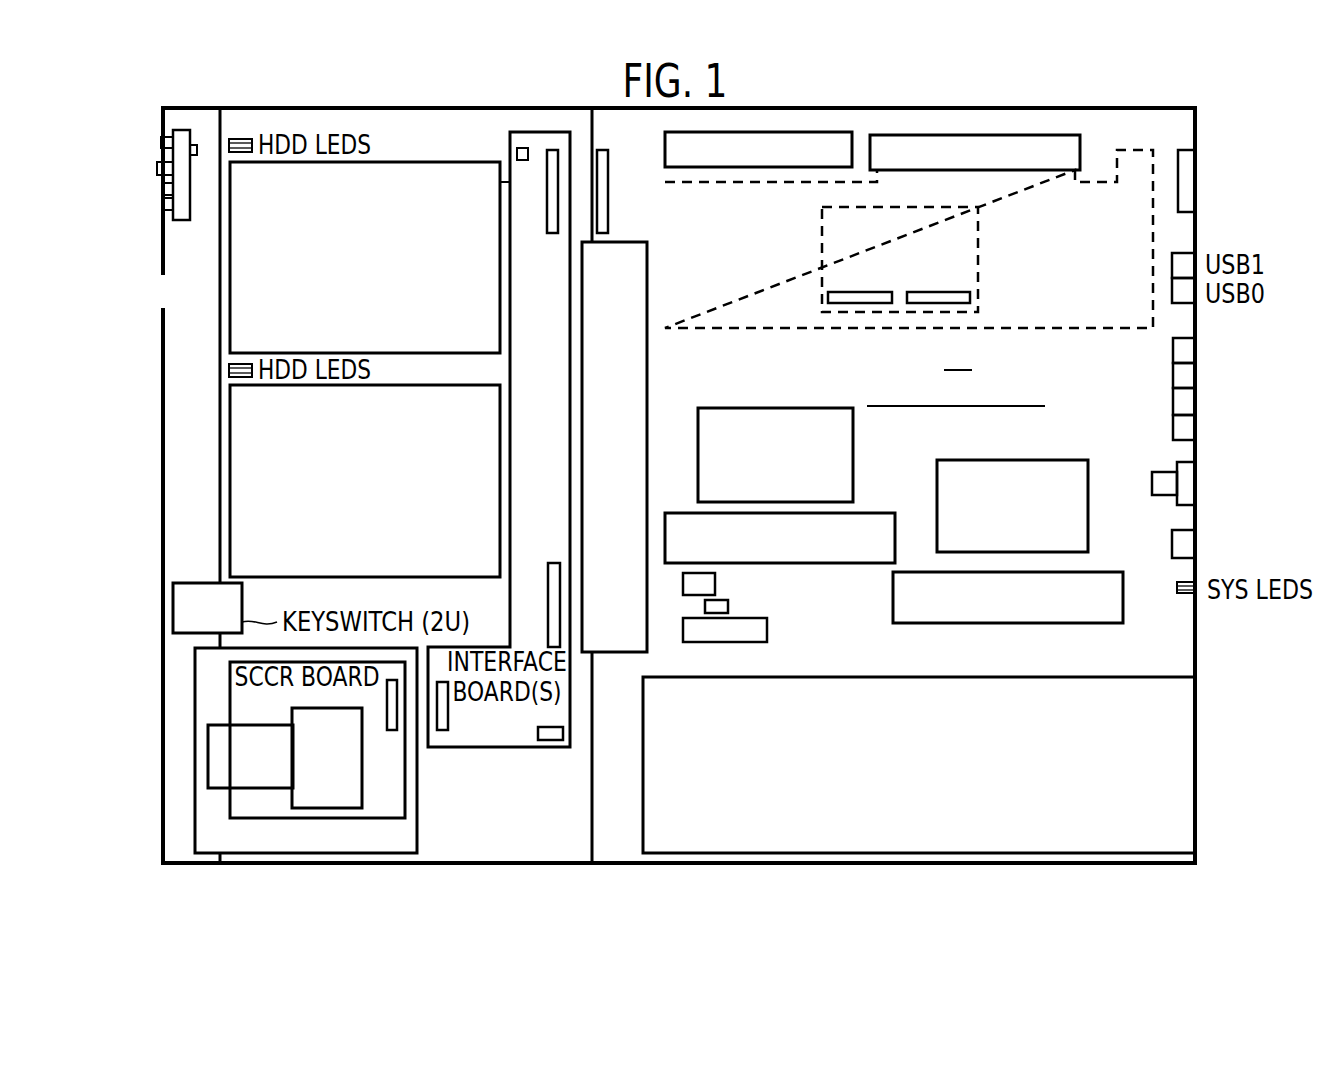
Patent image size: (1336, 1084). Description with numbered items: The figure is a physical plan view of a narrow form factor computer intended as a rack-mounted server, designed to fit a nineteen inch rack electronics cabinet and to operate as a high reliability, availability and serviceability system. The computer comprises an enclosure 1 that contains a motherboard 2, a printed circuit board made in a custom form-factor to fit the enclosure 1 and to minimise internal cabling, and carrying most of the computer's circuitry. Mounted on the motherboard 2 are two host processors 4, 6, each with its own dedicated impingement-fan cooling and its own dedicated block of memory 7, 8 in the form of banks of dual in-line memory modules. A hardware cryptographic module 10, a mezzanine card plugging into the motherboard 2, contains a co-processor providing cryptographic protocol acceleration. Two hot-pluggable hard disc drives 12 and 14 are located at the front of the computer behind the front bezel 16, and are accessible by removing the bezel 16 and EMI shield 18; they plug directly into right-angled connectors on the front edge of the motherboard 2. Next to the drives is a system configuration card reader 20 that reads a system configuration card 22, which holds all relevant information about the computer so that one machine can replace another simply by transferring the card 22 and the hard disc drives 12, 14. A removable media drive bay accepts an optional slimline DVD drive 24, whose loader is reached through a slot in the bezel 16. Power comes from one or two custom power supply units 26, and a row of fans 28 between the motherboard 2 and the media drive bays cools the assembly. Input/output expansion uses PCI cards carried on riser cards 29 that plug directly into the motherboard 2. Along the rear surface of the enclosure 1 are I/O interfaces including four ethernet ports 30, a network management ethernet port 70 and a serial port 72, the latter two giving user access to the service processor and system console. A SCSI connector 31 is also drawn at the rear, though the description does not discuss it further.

The enclosure 1 is at (626, 872).
The motherboard 2 is at (909, 278).
The processor 4 is at (775, 412).
The processor 6 is at (1010, 472).
The memory 7 is at (848, 560).
The memory 8 is at (1013, 612).
The hardware cryptographic module 10 is at (835, 252).
The hard disc drive 12 is at (450, 166).
The hard disc drive 14 is at (492, 577).
The front bezel 16 is at (163, 358).
The EMI shield 18 is at (220, 410).
The system configuration card reader 20 is at (347, 768).
The system configuration card 22 is at (208, 762).
The DVD drive 24 is at (410, 833).
The power supply unit 26 is at (1157, 683).
The fans 28 is at (647, 376).
The riser cards 29 is at (665, 149).
The ethernet ports 30 is at (1188, 430).
The SCSI connector 31 is at (1197, 158).
The network management ethernet port 70 is at (1187, 545).
The serial port 72 is at (1187, 490).